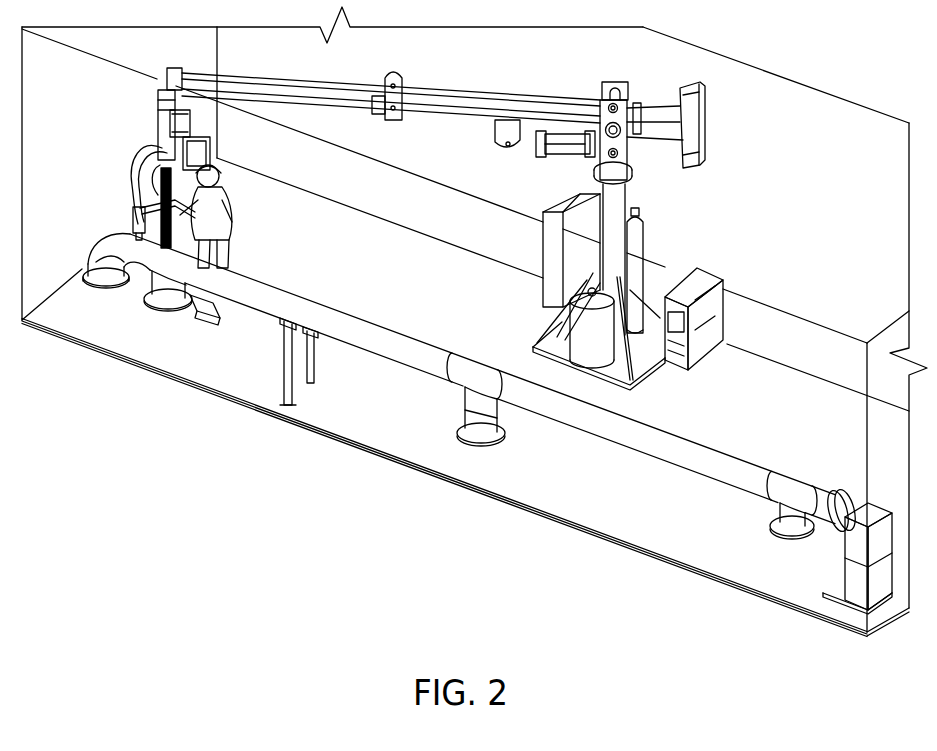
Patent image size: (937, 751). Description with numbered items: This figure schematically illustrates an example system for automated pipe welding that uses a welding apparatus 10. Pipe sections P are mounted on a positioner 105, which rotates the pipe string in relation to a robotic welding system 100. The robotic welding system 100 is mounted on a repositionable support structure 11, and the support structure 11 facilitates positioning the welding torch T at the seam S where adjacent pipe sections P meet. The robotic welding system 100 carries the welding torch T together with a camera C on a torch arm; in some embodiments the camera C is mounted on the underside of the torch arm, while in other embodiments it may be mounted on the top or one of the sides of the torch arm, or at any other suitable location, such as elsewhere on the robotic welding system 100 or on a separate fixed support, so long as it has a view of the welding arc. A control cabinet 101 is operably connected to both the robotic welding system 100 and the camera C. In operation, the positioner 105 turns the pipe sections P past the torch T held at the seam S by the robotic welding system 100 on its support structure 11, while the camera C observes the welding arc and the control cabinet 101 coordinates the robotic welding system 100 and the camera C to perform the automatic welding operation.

The welding apparatus 10 is at (308, 461).
The repositionable support structure 11 is at (705, 69).
The robotic welding system 100 is at (133, 108).
The control cabinet 101 is at (553, 204).
The positioner 105 is at (853, 543).
The pipe sections P is at (125, 233).
The welding torch T is at (134, 229).
The seam S is at (110, 243).
The camera C is at (130, 228).